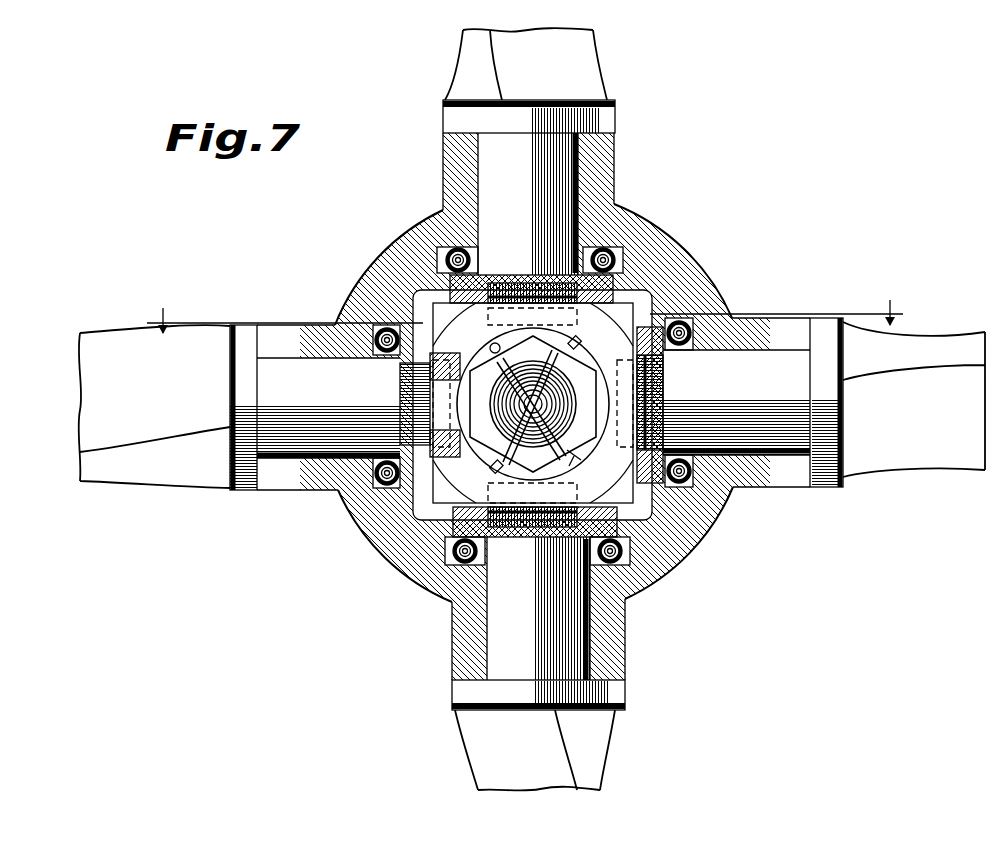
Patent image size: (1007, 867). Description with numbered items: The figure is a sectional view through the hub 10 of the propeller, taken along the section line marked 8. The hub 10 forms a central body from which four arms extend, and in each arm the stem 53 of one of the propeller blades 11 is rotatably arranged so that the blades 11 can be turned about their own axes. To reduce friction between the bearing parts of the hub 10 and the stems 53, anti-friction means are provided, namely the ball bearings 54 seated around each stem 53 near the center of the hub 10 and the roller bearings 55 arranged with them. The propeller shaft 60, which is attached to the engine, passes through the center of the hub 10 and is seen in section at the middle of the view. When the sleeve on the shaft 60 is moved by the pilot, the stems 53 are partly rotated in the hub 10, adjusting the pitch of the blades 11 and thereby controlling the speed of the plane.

The fuel tank 8 is at (527, 317).
The hub 10 is at (660, 258).
The blades 11 is at (585, 78).
The stems 53 is at (533, 406).
The ball bearings 54 is at (585, 255).
The roller bearings 55 is at (440, 258).
The propeller shaft 60 is at (512, 430).